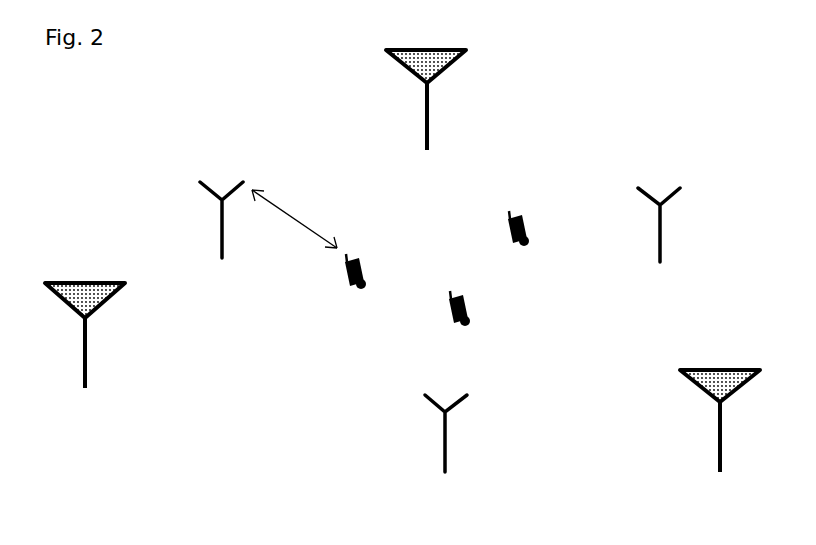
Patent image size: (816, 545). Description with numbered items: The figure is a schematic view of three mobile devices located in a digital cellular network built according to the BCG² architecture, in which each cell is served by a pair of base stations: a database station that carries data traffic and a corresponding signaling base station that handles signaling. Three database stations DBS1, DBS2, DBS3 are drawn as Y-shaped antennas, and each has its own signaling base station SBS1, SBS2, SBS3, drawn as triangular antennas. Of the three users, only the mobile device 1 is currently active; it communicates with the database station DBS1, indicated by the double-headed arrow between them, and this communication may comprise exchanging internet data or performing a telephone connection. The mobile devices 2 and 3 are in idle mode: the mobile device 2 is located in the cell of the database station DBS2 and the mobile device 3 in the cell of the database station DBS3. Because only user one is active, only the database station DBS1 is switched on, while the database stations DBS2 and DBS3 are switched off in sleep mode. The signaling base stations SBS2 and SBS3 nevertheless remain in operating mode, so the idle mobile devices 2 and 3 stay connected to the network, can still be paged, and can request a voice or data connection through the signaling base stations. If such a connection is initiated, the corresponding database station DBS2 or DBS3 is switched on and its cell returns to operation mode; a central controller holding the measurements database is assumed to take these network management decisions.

The mobile device 1 is at (353, 292).
The mobile device 2 is at (462, 330).
The mobile device 3 is at (530, 239).
The signaling base station SBS1 is at (426, 115).
The signaling base station SBS2 is at (85, 356).
The signaling base station SBS3 is at (720, 438).
The database station DBS1 is at (224, 237).
The database station DBS2 is at (441, 455).
The database station DBS3 is at (668, 240).